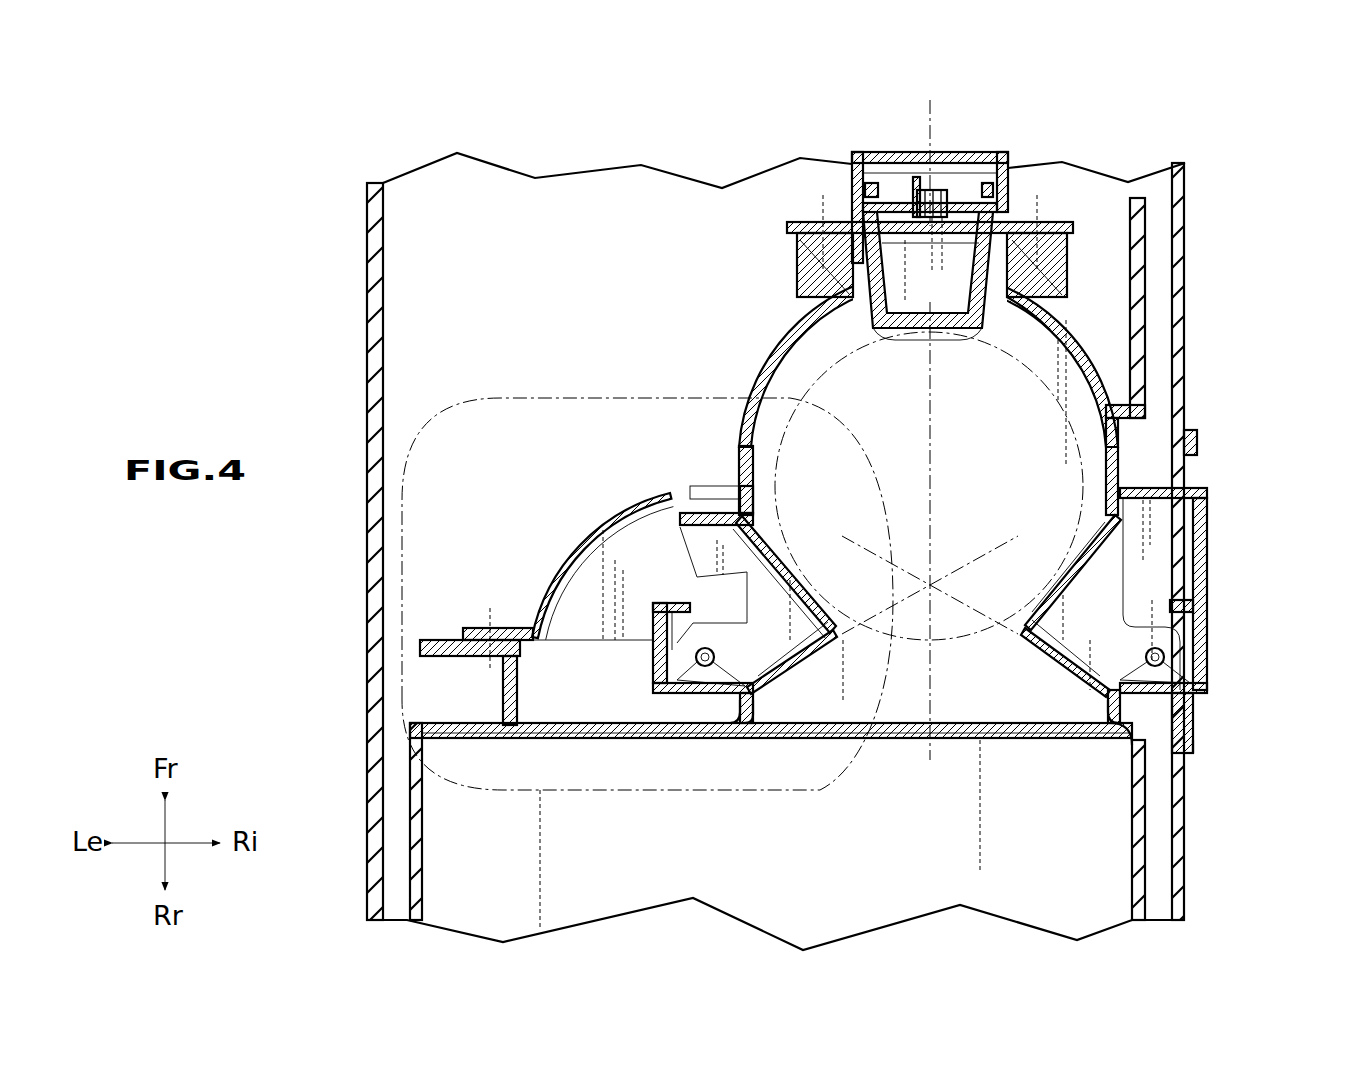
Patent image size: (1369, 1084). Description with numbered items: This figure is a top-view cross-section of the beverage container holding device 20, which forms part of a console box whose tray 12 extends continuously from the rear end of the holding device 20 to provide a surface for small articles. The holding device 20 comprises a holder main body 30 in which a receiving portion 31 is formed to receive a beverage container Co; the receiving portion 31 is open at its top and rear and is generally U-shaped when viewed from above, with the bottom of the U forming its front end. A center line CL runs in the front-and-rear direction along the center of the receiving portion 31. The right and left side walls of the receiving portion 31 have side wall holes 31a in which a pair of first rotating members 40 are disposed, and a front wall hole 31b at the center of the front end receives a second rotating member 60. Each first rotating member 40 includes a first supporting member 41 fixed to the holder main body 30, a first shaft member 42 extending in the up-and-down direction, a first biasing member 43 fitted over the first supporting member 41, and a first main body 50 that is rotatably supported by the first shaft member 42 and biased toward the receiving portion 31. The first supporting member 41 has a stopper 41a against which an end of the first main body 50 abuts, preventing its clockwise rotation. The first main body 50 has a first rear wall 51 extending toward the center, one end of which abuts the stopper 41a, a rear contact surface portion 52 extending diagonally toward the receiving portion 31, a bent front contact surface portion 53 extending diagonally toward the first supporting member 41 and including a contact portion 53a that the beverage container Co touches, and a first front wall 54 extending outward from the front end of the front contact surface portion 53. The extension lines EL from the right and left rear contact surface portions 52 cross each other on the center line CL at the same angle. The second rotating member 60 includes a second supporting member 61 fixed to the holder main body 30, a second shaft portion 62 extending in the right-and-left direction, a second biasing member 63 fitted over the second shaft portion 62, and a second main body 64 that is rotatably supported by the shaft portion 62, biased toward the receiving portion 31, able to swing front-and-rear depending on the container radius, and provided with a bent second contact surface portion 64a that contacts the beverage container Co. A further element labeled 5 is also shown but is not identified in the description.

The beverage container holding device 20 is at (205, 155).
The holder main body 30 is at (365, 305).
The tray 12 is at (832, 899).
The device outline 5 is at (848, 762).
The center line CL is at (936, 126).
The receiving portion 31 is at (984, 469).
The beverage container Co is at (825, 362).
The extension line EL is at (963, 560).
The second rotating member 60 is at (903, 188).
The second shaft portion 62 is at (852, 205).
The second supporting member 61 is at (863, 180).
The second main body 64 is at (905, 190).
The second biasing member 63 is at (911, 185).
The front wall hole 31b is at (982, 318).
The second contact surface portion 64a is at (905, 338).
The first front wall 54 is at (724, 492).
The first rotating member 40 is at (872, 604).
The first supporting member 41 is at (545, 600).
The first main body 50 is at (670, 500).
The front contact surface portion 53 is at (787, 592).
The contact portion 53a is at (822, 605).
The rear contact surface portion 52 is at (808, 655).
The first biasing member 43 is at (658, 600).
The first shaft member 42 is at (698, 647).
The stopper 41a is at (700, 690).
The first rear wall 51 is at (718, 725).
The side wall hole 31a is at (760, 724).